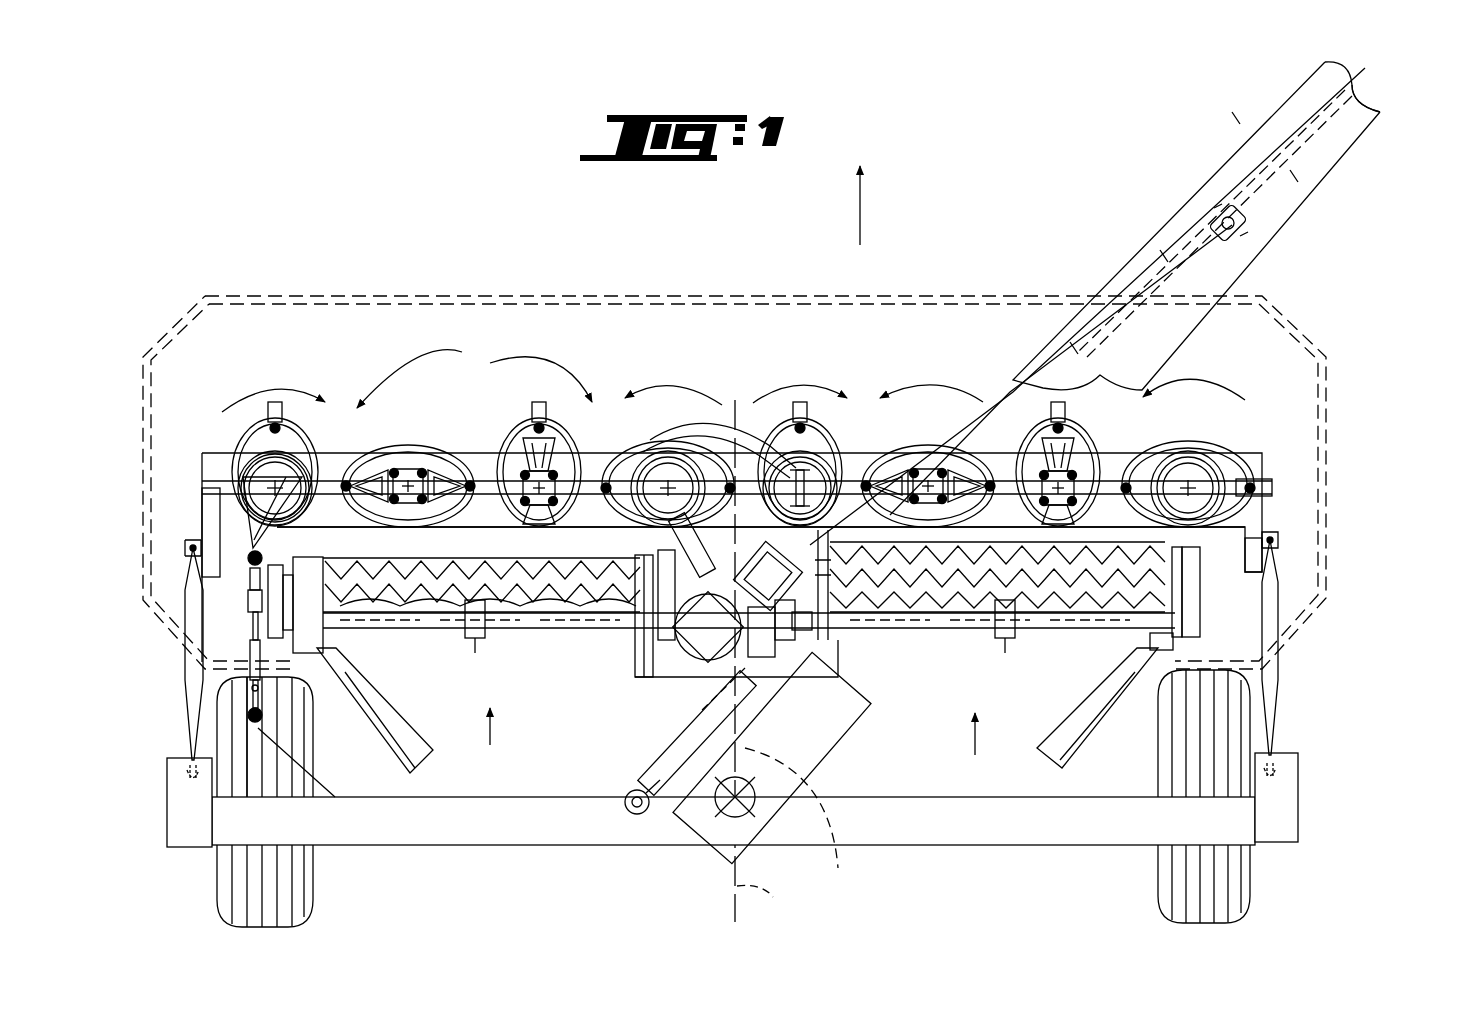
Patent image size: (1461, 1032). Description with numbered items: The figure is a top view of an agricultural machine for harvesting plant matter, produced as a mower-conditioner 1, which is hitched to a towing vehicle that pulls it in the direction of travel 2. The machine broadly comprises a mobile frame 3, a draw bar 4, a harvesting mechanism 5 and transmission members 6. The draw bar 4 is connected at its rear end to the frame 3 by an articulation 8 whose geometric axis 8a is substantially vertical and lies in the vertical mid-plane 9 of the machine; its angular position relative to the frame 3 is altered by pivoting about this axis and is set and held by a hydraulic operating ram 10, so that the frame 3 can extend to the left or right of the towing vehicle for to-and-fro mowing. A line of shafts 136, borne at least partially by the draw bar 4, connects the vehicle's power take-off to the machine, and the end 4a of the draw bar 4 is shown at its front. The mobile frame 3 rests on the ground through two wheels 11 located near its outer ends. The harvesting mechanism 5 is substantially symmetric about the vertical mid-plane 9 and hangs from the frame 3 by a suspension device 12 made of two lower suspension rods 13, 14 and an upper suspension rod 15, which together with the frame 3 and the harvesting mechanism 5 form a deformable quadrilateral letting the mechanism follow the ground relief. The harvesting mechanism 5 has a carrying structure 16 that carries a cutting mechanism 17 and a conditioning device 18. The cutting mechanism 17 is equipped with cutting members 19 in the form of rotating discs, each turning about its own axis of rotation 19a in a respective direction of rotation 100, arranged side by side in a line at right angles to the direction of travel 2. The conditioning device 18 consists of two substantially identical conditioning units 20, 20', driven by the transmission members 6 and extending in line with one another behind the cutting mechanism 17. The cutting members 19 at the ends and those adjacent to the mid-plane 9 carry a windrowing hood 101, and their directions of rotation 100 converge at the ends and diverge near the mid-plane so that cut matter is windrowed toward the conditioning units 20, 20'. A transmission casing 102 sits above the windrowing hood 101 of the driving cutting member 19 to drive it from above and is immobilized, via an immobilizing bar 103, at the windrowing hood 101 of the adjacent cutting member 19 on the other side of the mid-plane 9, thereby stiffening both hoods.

The mower-conditioner 1 is at (390, 292).
The direction of travel 2 is at (860, 210).
The mobile frame 3 is at (1078, 833).
The draw bar 4 is at (1303, 103).
The drawbar arm end 4a is at (1352, 88).
The harvesting mechanism 5 is at (343, 447).
The transmission members 6 is at (700, 677).
The articulation 8 is at (712, 805).
The geometric axis 8a is at (784, 825).
The vertical mid-plane 9 is at (763, 903).
The hydraulic operating ram 10 is at (666, 767).
The wheels 11 is at (300, 887).
The suspension device 12 is at (1282, 694).
The lower suspension rod 13 is at (192, 688).
The lower suspension rod 14 is at (1280, 597).
The upper suspension rod 15 is at (250, 647).
The carrying structure 16 is at (383, 557).
The cutting mechanism 17 is at (485, 447).
The conditioning device 18 is at (571, 632).
The cutting members 19 is at (310, 450).
The axis of rotation 19a is at (440, 455).
The conditioning unit 20 is at (976, 750).
The conditioning unit 20' is at (500, 743).
The direction of rotation 100 is at (275, 392).
The windrowing hood 101 is at (262, 476).
The transmission casing 102 is at (695, 440).
The immobilizing bar 103 is at (742, 462).
The line of shafts 136 is at (1160, 250).